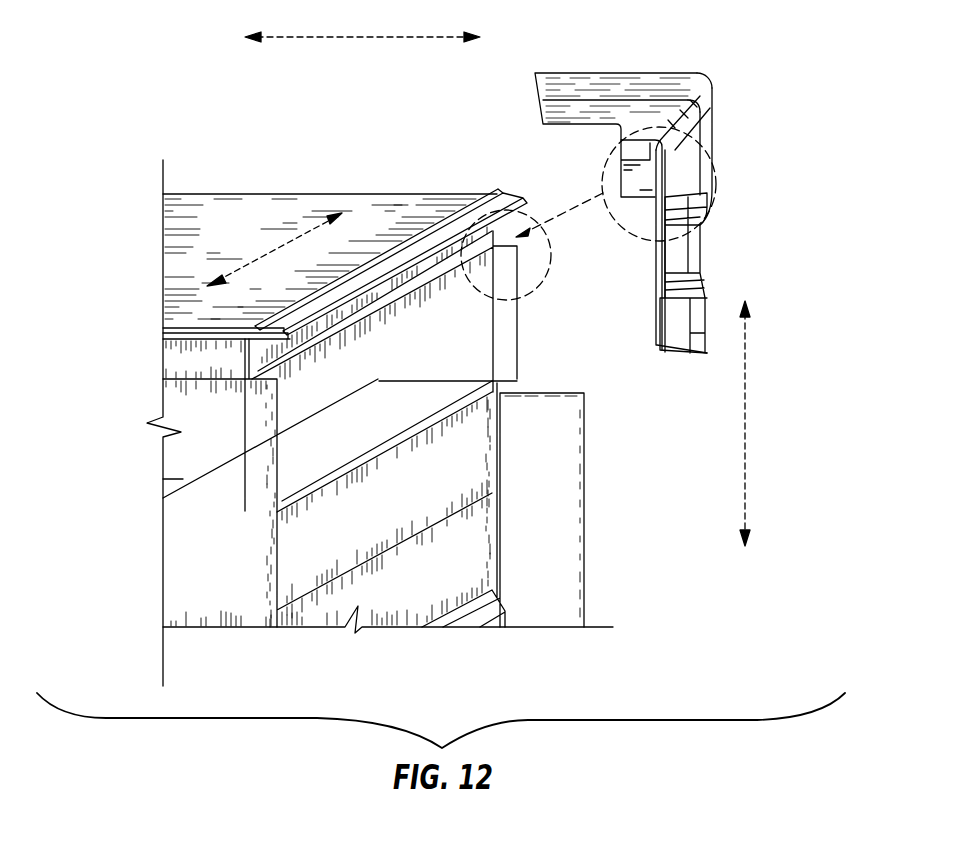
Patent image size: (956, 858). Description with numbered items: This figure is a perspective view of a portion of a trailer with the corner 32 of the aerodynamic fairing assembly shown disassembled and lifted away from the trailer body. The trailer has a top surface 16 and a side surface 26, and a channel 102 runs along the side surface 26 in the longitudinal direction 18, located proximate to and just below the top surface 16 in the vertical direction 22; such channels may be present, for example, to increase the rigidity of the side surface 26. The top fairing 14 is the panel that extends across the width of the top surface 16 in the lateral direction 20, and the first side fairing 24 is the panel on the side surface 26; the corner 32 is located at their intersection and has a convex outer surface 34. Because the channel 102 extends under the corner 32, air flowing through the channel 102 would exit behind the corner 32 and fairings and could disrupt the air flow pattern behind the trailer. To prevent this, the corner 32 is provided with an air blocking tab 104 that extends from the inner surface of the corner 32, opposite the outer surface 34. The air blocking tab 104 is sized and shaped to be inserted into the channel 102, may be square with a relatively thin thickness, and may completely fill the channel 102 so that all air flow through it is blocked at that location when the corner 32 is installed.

The top fairing 14 is at (611, 80).
The top surface 16 is at (191, 250).
The longitudinal direction 18 is at (365, 36).
The lateral direction 20 is at (275, 248).
The vertical direction 22 is at (760, 425).
The first side fairing 24 is at (703, 242).
The side surface 26 is at (293, 420).
The corner 32 is at (695, 112).
The outer surface 34 is at (703, 88).
The channel 102 is at (326, 335).
The air blocking tab 104 is at (647, 178).